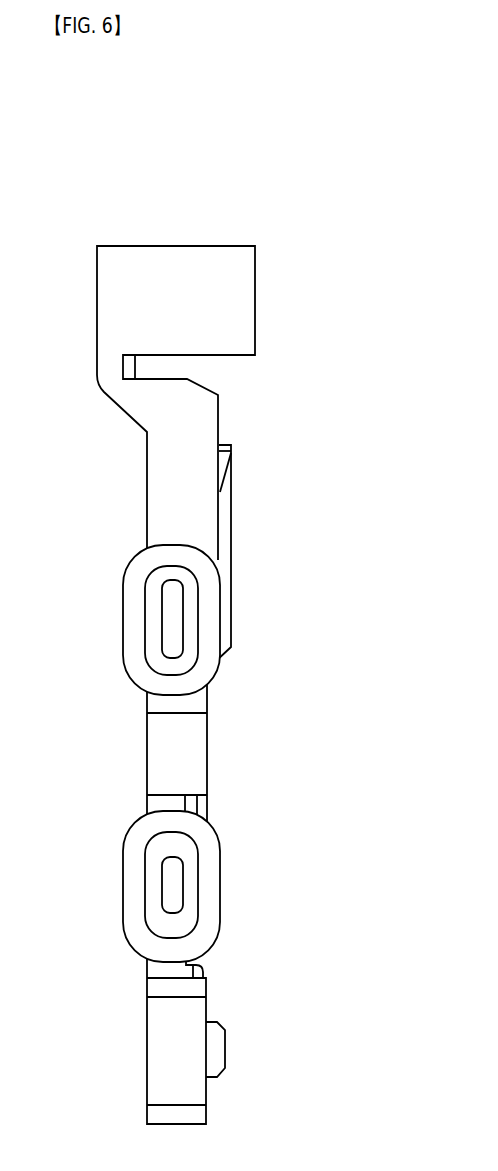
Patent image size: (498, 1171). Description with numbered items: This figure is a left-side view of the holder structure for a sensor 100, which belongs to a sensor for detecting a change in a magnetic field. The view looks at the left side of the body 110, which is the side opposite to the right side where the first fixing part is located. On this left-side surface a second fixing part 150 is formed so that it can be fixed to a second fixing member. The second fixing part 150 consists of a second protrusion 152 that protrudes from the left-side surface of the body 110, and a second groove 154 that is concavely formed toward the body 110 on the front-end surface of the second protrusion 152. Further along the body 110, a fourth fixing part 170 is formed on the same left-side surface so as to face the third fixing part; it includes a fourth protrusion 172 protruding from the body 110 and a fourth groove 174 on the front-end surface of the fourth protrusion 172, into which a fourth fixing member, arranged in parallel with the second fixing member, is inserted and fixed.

The holder structure for a sensor 100 is at (118, 142).
The body 110 is at (185, 743).
The second fixing part 150 is at (262, 599).
The second protrusion 152 is at (188, 575).
The second groove 154 is at (177, 633).
The fourth fixing part 170 is at (262, 865).
The fourth protrusion 172 is at (213, 827).
The fourth groove 174 is at (177, 897).